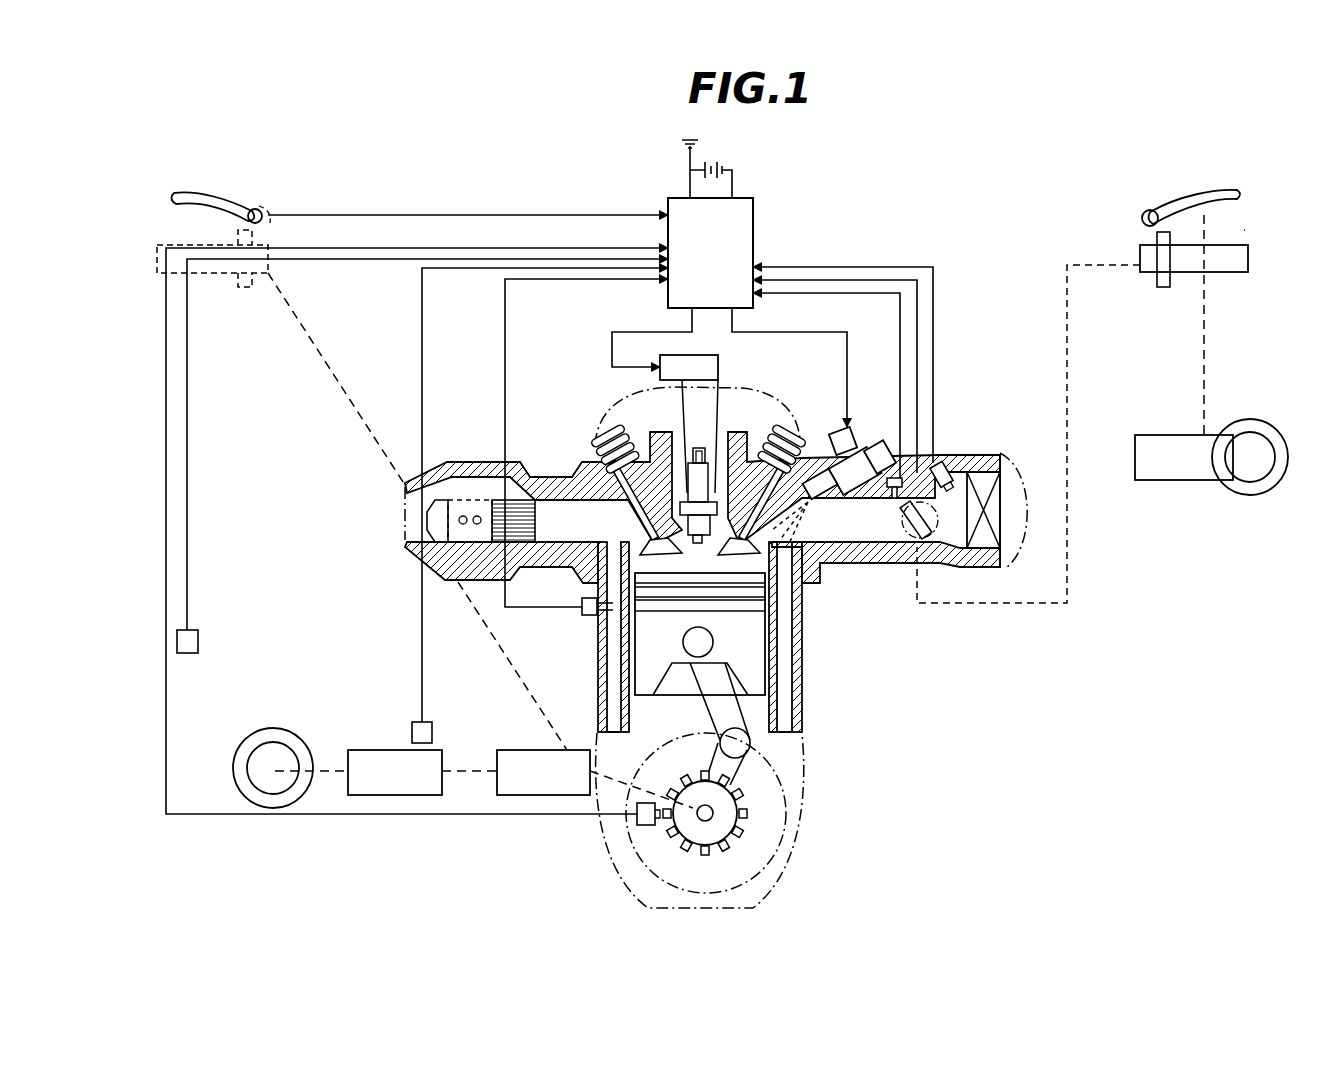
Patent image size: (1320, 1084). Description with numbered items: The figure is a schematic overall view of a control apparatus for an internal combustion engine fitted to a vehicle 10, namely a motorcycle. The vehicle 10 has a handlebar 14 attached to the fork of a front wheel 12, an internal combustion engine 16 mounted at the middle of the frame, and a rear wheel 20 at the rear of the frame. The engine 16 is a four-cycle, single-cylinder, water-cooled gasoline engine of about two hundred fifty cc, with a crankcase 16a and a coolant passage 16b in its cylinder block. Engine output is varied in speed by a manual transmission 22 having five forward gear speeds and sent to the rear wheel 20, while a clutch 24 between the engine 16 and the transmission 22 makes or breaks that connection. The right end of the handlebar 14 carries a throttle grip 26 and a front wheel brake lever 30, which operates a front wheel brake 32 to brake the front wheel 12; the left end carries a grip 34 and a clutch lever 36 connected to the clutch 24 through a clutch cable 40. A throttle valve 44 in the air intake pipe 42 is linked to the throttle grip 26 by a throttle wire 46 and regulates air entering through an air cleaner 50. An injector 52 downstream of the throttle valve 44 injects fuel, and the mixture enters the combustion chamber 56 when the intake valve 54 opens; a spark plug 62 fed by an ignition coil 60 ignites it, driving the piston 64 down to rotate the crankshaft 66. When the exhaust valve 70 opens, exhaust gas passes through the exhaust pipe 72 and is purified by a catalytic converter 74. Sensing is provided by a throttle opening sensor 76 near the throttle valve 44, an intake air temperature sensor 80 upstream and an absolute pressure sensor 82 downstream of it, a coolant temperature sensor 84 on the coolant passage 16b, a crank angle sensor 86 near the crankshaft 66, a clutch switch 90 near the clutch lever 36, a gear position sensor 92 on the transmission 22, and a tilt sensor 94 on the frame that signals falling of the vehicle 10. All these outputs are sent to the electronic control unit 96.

The vehicle 10 is at (1246, 230).
The front wheel 12 is at (1245, 420).
The handlebar 14 is at (177, 245).
The internal combustion engine 16 is at (818, 740).
The crankcase 16a is at (790, 847).
The coolant passage 16b is at (598, 650).
The rear wheel 20 is at (276, 728).
The transmission 22 is at (352, 750).
The clutch 24 is at (513, 750).
The throttle grip 26 is at (1249, 258).
The front wheel brake lever 30 is at (1178, 204).
The front wheel brake 32 is at (1135, 453).
The grip 34 is at (157, 260).
The clutch lever 36 is at (205, 194).
The clutch cable 40 is at (325, 372).
The air intake pipe 42 is at (960, 565).
The throttle valve 44 is at (905, 530).
The throttle wire 46 is at (1075, 531).
The air cleaner 50 is at (1000, 500).
The injector 52 is at (858, 450).
The intake valve 54 is at (790, 435).
The combustion chamber 56 is at (710, 571).
The ignition coil 60 is at (700, 363).
The spark plug 62 is at (686, 470).
The piston 64 is at (665, 665).
The crankshaft 66 is at (705, 821).
The exhaust valve 70 is at (610, 433).
The exhaust pipe 72 is at (542, 550).
The catalytic converter 74 is at (522, 510).
The throttle opening sensor 76 is at (907, 535).
The intake air temperature sensor 80 is at (945, 465).
The absolute pressure sensor 82 is at (895, 498).
The coolant temperature sensor 84 is at (582, 610).
The crank angle sensor 86 is at (650, 825).
The clutch switch 90 is at (270, 222).
The gear position sensor 92 is at (413, 730).
The tilt sensor 94 is at (198, 642).
The electronic control unit 96 is at (668, 240).